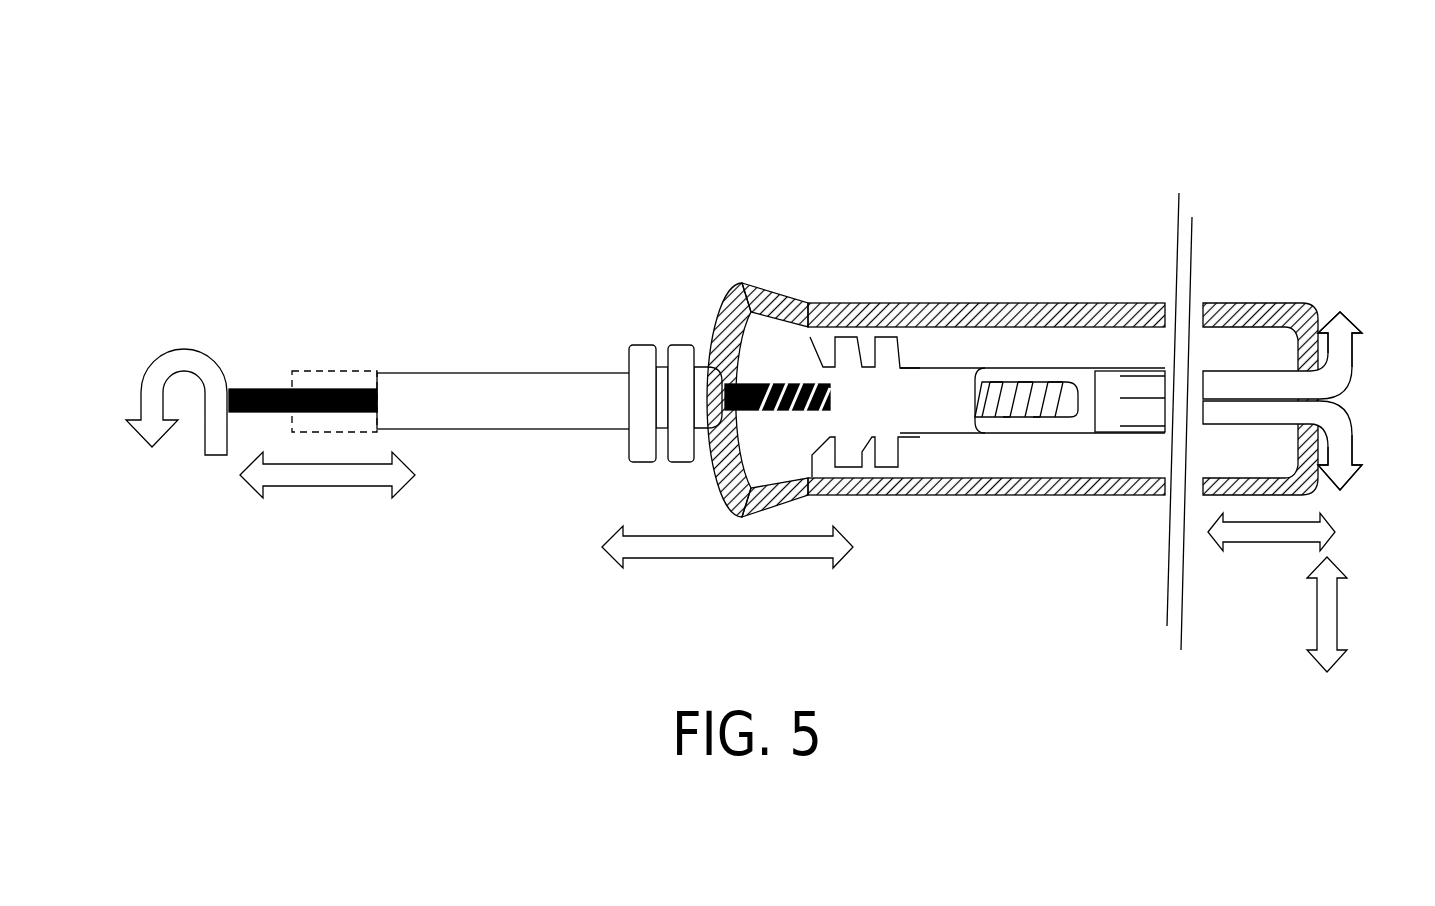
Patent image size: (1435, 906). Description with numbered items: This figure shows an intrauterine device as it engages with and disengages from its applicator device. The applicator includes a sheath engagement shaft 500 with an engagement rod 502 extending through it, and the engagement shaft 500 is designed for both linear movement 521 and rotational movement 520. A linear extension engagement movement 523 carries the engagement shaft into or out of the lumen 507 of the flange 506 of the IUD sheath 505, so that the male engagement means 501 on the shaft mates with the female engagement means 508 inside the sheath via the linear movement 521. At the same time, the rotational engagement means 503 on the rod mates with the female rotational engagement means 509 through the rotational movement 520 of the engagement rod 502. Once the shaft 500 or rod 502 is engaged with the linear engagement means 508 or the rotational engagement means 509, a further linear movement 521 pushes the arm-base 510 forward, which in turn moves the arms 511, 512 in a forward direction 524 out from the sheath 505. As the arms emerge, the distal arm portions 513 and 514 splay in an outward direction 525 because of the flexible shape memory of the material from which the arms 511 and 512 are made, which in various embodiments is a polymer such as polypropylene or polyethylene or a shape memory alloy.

The sheath engagement shaft 500 is at (497, 372).
The male engagement means 501 is at (660, 355).
The engagement rod 502 is at (271, 385).
The rotational engagement means 503 is at (785, 382).
The IUD sheath 505 is at (963, 303).
The flange 506 is at (745, 290).
The lumen 507 is at (787, 342).
The female engagement means 508 is at (847, 353).
The female rotational engagement means 509 is at (1027, 393).
The arm-base 510 is at (1097, 400).
The arm 511 is at (1222, 368).
The arm 512 is at (1225, 413).
The distal arm portion 513 is at (1352, 358).
The distal arm portion 514 is at (1333, 437).
The rotational movement 520 is at (174, 425).
The linear movement 521 is at (327, 493).
The linear extension engagement movement 523 is at (727, 570).
The forward direction 524 is at (1271, 547).
The outward direction 525 is at (1302, 614).